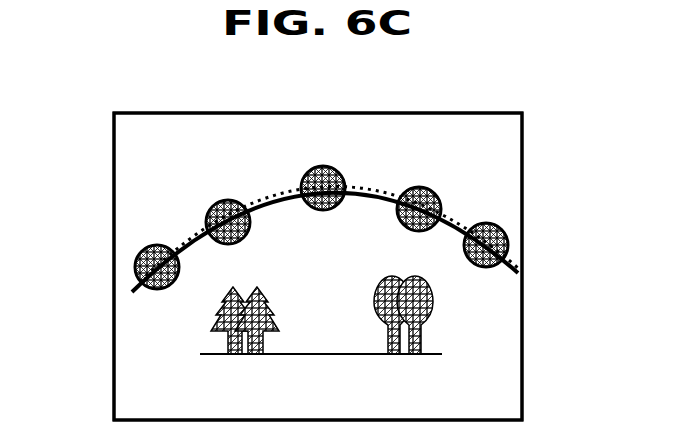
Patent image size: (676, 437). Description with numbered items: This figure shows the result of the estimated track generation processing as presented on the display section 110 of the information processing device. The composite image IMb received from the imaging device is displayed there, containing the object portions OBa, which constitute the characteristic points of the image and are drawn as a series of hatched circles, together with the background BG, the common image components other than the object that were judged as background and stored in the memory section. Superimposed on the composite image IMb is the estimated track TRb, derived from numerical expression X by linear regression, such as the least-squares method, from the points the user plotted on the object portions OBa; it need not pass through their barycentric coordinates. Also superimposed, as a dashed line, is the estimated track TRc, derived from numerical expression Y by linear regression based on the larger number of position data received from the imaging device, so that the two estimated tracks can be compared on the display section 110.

The display section 110 is at (425, 113).
The composite image IMb is at (498, 169).
The object portions OBa is at (137, 247).
The estimated track TRb is at (360, 202).
The estimated track TRc is at (380, 192).
The background BG is at (448, 330).